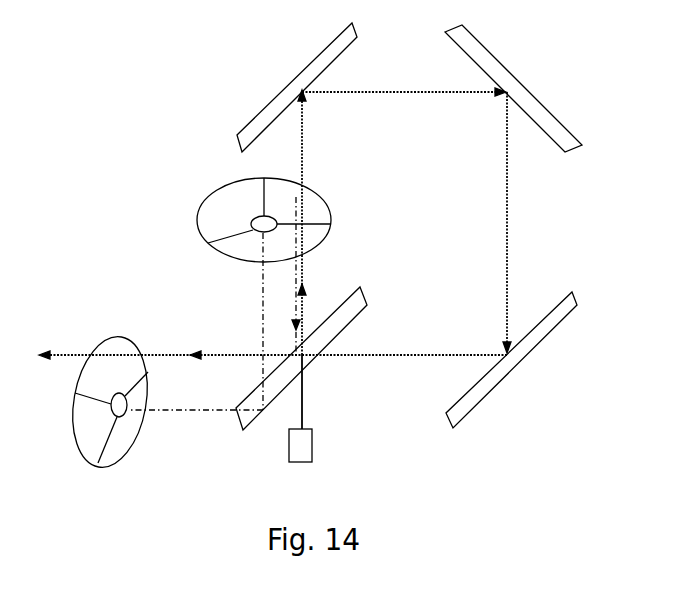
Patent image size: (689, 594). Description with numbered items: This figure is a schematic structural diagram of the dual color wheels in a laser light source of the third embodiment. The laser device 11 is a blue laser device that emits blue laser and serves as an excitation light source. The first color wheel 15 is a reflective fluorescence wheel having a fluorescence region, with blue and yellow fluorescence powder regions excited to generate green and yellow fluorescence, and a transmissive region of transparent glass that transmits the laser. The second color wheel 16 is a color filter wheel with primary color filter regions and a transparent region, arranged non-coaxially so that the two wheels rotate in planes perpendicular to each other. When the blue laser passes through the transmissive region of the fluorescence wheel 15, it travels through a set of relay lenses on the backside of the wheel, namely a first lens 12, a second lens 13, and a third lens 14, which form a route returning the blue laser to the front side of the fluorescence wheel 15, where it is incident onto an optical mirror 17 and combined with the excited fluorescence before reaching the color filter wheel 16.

The laser device 11 is at (320, 435).
The first lens 12 is at (290, 82).
The second lens 13 is at (518, 78).
The third lens 14 is at (528, 357).
The first color wheel 15 is at (198, 230).
The second color wheel 16 is at (112, 338).
The optical mirror 17 is at (308, 365).